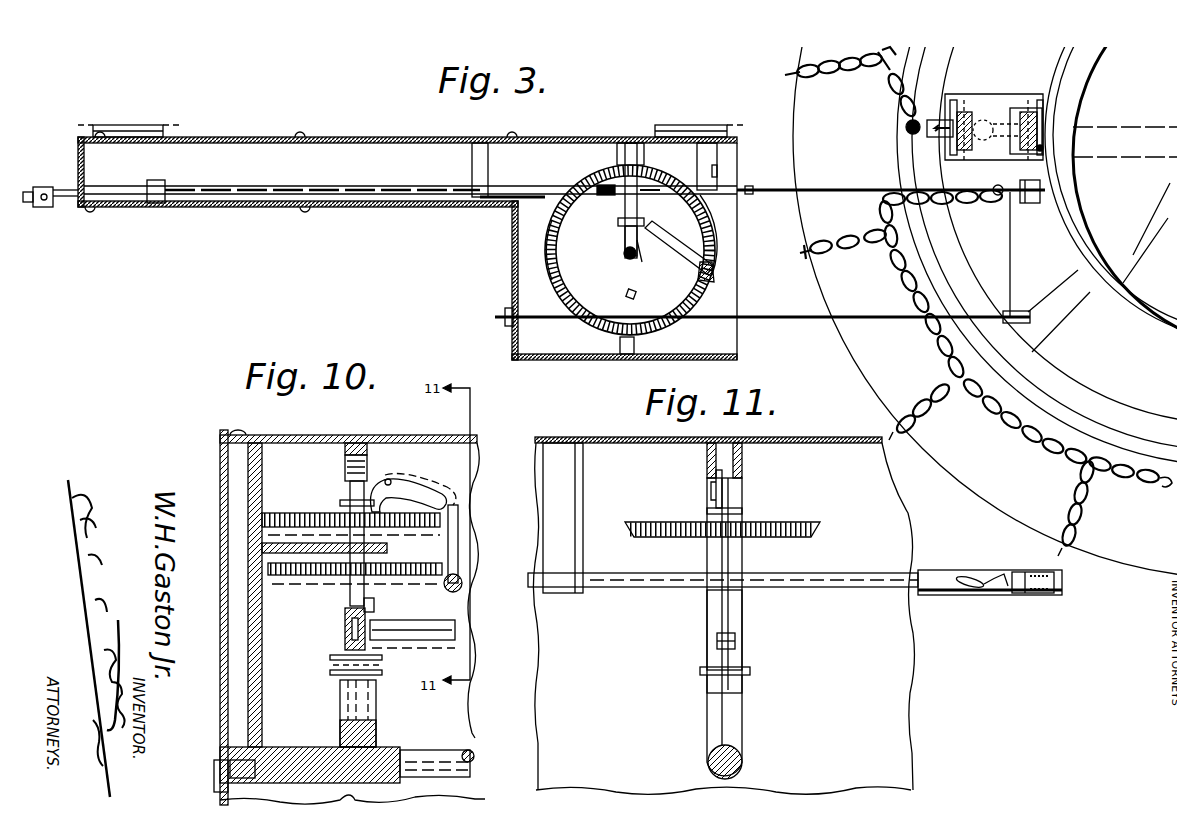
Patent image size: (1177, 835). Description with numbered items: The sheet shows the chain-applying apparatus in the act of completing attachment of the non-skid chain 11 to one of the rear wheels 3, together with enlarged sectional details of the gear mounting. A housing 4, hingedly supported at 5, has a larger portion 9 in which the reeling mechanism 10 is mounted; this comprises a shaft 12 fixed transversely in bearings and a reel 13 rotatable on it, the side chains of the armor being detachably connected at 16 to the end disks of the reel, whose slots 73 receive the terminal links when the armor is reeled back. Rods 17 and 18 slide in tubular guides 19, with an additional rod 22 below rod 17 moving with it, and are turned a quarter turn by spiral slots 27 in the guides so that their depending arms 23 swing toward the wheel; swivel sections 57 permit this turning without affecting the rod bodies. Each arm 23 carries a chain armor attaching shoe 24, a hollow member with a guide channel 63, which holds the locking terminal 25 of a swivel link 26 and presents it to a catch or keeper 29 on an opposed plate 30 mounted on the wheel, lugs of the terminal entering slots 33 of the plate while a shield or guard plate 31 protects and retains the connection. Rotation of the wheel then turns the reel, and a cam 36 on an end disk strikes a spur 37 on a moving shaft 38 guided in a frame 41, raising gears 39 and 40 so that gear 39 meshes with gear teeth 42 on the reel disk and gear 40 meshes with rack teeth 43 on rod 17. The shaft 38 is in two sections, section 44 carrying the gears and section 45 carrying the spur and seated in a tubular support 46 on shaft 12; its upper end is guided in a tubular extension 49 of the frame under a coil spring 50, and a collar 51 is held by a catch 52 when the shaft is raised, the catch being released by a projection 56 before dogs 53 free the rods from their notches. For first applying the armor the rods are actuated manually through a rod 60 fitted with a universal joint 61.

In FIG. 3, the rear wheel 3 is at (1046, 382).
In FIG. 3, the housing 4 is at (393, 137).
In FIG. 10, the housing 4 is at (220, 667).
In FIG. 11, the housing 4 is at (590, 439).
In FIG. 3, the hinge support 5 is at (133, 125).
In FIG. 3, the larger portion of housing 9 is at (518, 255).
In FIG. 3, the reeling mechanism 10 is at (718, 242).
In FIG. 3, the non-skid chain 11 is at (900, 402).
In FIG. 3, the shaft 12 is at (622, 257).
In FIG. 10, the shaft 12 is at (473, 751).
In FIG. 11, the shaft 12 is at (745, 762).
In FIG. 3, the reel 13 is at (561, 282).
In FIG. 3, the connection of side chains 16 is at (660, 234).
In FIG. 3, the rod 17 is at (775, 192).
In FIG. 11, the rod 17 is at (1060, 592).
In FIG. 3, the rod 18 is at (760, 185).
In FIG. 3, the tubular guide 19 is at (416, 186).
In FIG. 11, the tubular guide 19 is at (966, 570).
In FIG. 3, the additional rod 22 is at (788, 320).
In FIG. 3, the depending arm 23 is at (1010, 215).
In FIG. 3, the chain armor attaching shoe 24 is at (1029, 204).
In FIG. 3, the locking terminal 25 is at (948, 110).
In FIG. 3, the swivel link 26 is at (918, 119).
In FIG. 11, the spiral slot 27 is at (980, 596).
In FIG. 3, the catch or keeper 29 is at (1012, 97).
In FIG. 3, the opposed plate 30 is at (1025, 108).
In FIG. 3, the shield or guard plate 31 is at (993, 136).
In FIG. 3, the slot or groove 33 is at (977, 112).
In FIG. 3, the cam 36 is at (628, 296).
In FIG. 10, the projection or spur 37 is at (450, 642).
In FIG. 11, the projection or spur 37 is at (745, 646).
In FIG. 10, the moving shaft 38 is at (344, 627).
In FIG. 3, the gear 39 is at (615, 172).
In FIG. 10, the gear 39 is at (288, 512).
In FIG. 11, the gear 39 is at (779, 521).
In FIG. 3, the gear 40 is at (645, 195).
In FIG. 10, the gear 40 is at (290, 585).
In FIG. 11, the gear 40 is at (795, 572).
In FIG. 3, the frame 41 is at (649, 255).
In FIG. 10, the frame 41 is at (262, 680).
In FIG. 3, the gear teeth 42 is at (679, 320).
In FIG. 10, the rack teeth 43 is at (462, 584).
In FIG. 10, the shaft section 44 is at (374, 607).
In FIG. 11, the shaft section 44 is at (725, 614).
In FIG. 10, the shaft section 45 is at (374, 646).
In FIG. 11, the shaft section 45 is at (748, 671).
In FIG. 3, the tubular support 46 is at (622, 240).
In FIG. 10, the tubular support 46 is at (378, 722).
In FIG. 11, the tubular support 46 is at (716, 722).
In FIG. 3, the tubular extension 49 is at (605, 140).
In FIG. 10, the tubular extension 49 is at (345, 470).
In FIG. 11, the tubular extension 49 is at (712, 464).
In FIG. 10, the coil spring 50 is at (362, 435).
In FIG. 3, the collar 51 is at (636, 147).
In FIG. 10, the collar 51 is at (347, 500).
In FIG. 11, the collar 51 is at (708, 513).
In FIG. 10, the catch 52 is at (427, 467).
In FIG. 11, the catch 52 is at (712, 493).
In FIG. 3, the dog 53 is at (734, 130).
In FIG. 3, the projection 56 is at (620, 194).
In FIG. 11, the swivel section 57 is at (1035, 595).
In FIG. 3, the rod 60 is at (124, 207).
In FIG. 3, the universal joint 61 is at (45, 210).
In FIG. 3, the guide channel 63 is at (542, 204).
In FIG. 3, the slot 73 is at (706, 272).